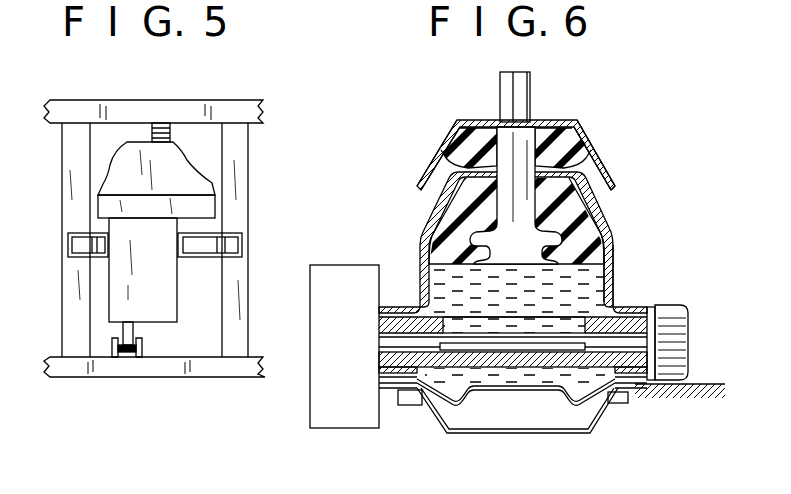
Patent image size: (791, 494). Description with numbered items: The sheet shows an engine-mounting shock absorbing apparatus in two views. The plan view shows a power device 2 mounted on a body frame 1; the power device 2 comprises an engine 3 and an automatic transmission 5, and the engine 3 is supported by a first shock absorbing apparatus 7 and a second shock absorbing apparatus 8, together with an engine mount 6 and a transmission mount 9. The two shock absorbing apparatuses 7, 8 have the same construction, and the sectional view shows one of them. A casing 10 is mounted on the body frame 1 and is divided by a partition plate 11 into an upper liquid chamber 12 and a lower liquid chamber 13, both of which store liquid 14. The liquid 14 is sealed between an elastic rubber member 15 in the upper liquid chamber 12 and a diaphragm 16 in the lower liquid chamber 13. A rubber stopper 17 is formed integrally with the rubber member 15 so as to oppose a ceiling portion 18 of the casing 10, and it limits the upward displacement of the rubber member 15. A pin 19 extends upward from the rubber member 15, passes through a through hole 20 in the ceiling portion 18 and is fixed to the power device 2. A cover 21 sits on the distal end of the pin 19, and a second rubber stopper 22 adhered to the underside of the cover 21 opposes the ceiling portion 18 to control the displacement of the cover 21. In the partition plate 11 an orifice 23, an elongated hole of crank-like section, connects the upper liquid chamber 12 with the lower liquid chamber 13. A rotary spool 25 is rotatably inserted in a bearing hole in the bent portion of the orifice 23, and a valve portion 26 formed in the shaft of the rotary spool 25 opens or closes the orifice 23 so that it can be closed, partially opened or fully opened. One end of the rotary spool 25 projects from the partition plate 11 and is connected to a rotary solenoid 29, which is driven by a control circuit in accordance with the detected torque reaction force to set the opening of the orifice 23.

In FIG. 5, the body frame 1 is at (248, 317).
In FIG. 6, the body frame 1 is at (703, 383).
In FIG. 5, the power device 2 is at (180, 295).
In FIG. 5, the engine 3 is at (160, 317).
In FIG. 5, the automatic transmission 5 is at (182, 170).
In FIG. 5, the engine mount 6 is at (122, 358).
In FIG. 5, the first shock absorbing apparatus 7 is at (68, 243).
In FIG. 5, the second shock absorbing apparatus 8 is at (242, 245).
In FIG. 5, the transmission mount 9 is at (152, 140).
In FIG. 5, the casing 10 is at (210, 232).
In FIG. 6, the casing 10 is at (615, 242).
In FIG. 6, the partition plate 11 is at (640, 308).
In FIG. 6, the upper liquid chamber 12 is at (585, 283).
In FIG. 6, the lower liquid chamber 13 is at (598, 407).
In FIG. 6, the liquid 14 is at (427, 283).
In FIG. 6, the rubber member 15 is at (430, 228).
In FIG. 6, the diaphragm 16 is at (545, 390).
In FIG. 6, the rubber stopper 17 is at (603, 231).
In FIG. 6, the ceiling portion 18 is at (606, 190).
In FIG. 6, the pin 19 is at (532, 90).
In FIG. 6, the through hole 20 is at (588, 148).
In FIG. 6, the cover 21 is at (456, 121).
In FIG. 6, the rubber stopper 22 is at (451, 137).
In FIG. 6, the orifice 23 is at (521, 330).
In FIG. 6, the rotary spool 25 is at (388, 394).
In FIG. 6, the valve portion 26 is at (477, 350).
In FIG. 6, the rotary solenoid 29 is at (350, 430).